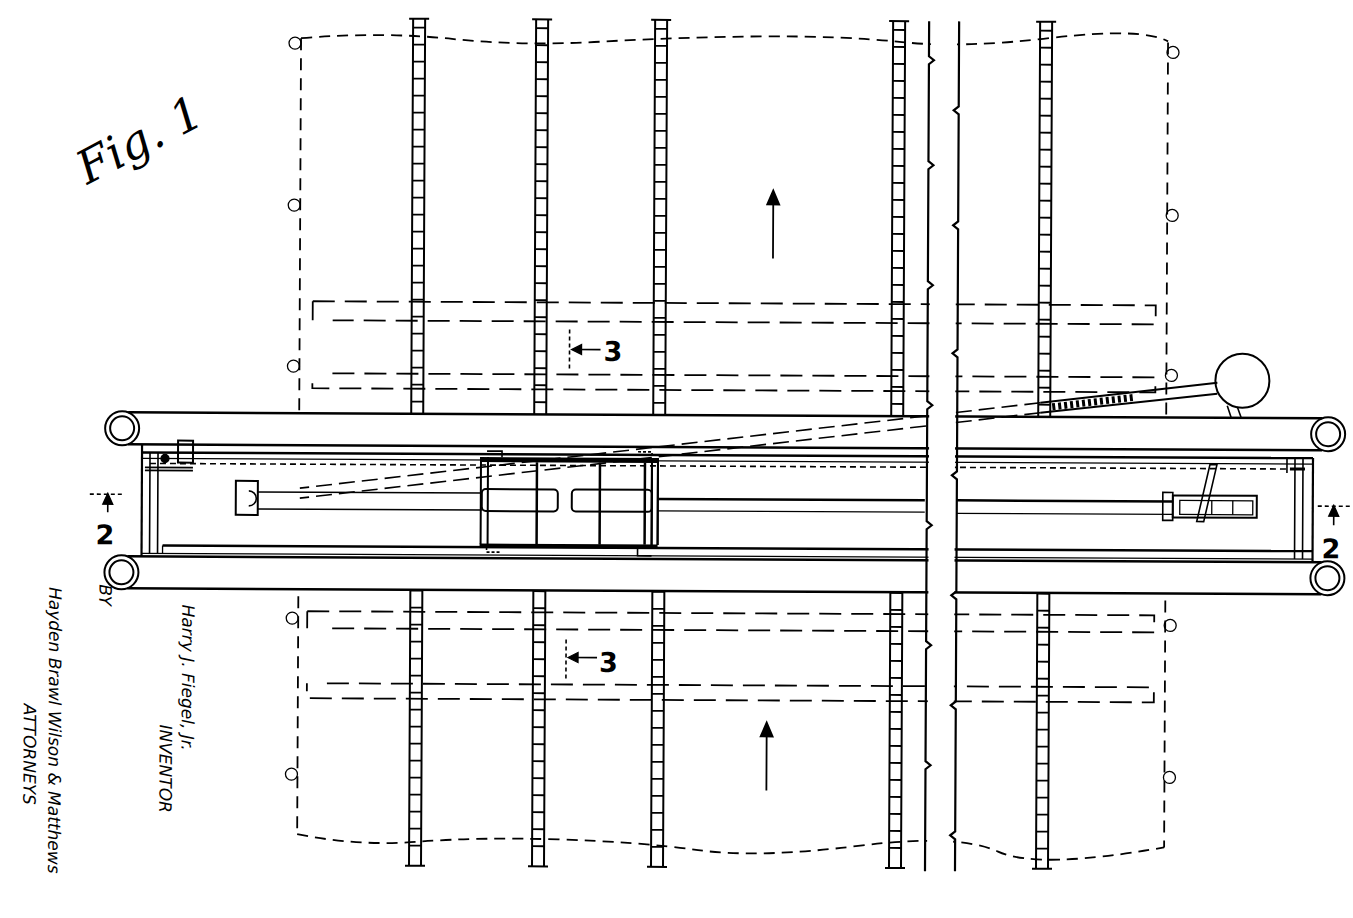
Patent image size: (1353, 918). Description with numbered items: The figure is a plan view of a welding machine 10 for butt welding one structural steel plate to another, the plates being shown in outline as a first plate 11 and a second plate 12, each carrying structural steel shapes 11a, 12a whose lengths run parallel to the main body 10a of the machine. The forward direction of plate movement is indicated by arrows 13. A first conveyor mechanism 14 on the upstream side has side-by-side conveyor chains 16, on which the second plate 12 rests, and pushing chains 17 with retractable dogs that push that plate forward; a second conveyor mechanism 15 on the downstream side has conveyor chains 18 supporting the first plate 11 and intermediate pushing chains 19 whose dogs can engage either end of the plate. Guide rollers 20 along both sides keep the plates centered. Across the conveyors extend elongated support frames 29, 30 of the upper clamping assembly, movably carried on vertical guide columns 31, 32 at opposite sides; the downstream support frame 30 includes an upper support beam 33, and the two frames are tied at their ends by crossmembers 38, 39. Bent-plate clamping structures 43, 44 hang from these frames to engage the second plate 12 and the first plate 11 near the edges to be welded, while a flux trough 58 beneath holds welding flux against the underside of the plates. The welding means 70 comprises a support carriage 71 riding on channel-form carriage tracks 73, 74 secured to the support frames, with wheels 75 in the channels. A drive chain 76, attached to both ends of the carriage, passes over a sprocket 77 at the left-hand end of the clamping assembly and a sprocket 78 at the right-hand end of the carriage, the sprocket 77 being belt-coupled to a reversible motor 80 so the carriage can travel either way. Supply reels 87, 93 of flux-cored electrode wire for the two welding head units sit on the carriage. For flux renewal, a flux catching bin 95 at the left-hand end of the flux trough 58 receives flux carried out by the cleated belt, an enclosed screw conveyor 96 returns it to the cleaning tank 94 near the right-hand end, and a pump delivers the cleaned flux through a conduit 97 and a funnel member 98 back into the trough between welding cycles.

The welding machine 10 is at (263, 350).
The main body 10a is at (228, 411).
The first plate 11 is at (310, 332).
The structural steel shapes 11a is at (352, 322).
The second plate 12 is at (298, 728).
The structural steel shapes 12a is at (318, 660).
The arrows 13 is at (776, 225).
The first conveyor mechanism 14 is at (602, 760).
The second conveyor mechanism 15 is at (607, 202).
The conveyor chains 16 is at (425, 748).
The pushing chain 17 is at (534, 775).
The conveyor chains 18 is at (425, 111).
The pushing chain 19 is at (548, 122).
The guide rollers 20 is at (287, 207).
The support frame 29 is at (724, 592).
The support frame 30 is at (726, 413).
The vertical guide columns 31 is at (106, 423).
The vertical guide columns 32 is at (1333, 415).
The upper support beam 33 is at (782, 419).
The crossmember 38 is at (142, 482).
The crossmember 39 is at (1302, 537).
The clamping structure 43 is at (733, 487).
The clamping structure 44 is at (879, 523).
The flux trough 58 is at (960, 505).
The welding means 70 is at (578, 537).
The support carriage 71 is at (660, 527).
The carriage track 73 is at (378, 548).
The carriage track 74 is at (385, 452).
The wheels 75 is at (488, 450).
The drive chain 76 is at (213, 470).
The sprocket 77 is at (148, 456).
The sprocket 78 is at (1303, 477).
The motor 80 is at (186, 443).
The supply reel 87 is at (528, 498).
The electrode wire supply reel 93 is at (628, 497).
The cleaning tank 94 is at (1262, 358).
The flux catching bin 95 is at (233, 510).
The screw conveyor 96 is at (1195, 384).
The conduit 97 is at (1218, 482).
The funnel member 98 is at (1200, 520).